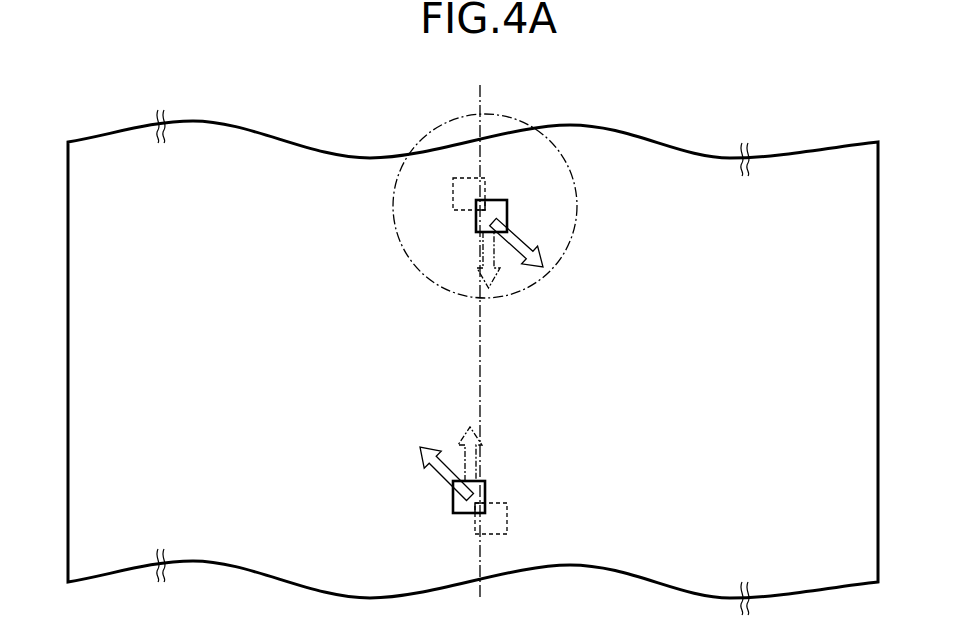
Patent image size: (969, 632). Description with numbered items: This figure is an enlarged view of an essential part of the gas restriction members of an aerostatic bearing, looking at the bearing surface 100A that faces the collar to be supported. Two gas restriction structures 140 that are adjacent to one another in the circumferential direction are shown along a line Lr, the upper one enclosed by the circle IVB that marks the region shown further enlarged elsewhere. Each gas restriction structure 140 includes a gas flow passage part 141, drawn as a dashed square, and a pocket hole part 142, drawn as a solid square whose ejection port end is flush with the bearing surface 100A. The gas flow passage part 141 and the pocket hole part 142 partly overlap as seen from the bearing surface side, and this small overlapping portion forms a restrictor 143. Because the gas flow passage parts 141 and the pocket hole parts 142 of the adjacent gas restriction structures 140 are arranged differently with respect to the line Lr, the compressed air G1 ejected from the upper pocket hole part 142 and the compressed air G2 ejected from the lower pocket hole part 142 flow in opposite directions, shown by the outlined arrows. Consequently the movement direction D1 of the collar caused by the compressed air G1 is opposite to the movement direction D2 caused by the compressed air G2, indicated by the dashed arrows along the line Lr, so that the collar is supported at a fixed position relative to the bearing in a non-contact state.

The bearing surface 100A is at (757, 289).
The gas restriction structure 140 is at (513, 181).
The gas flow passage part 141 is at (453, 184).
The pocket hole part 142 is at (476, 222).
The restrictor 143 is at (477, 204).
The line Lr is at (479, 329).
The enlarged region of FIG. 4B IVB is at (437, 132).
The movement direction D1 is at (482, 277).
The movement direction D2 is at (482, 443).
The compressed air G1 is at (522, 265).
The compressed air G2 is at (433, 472).